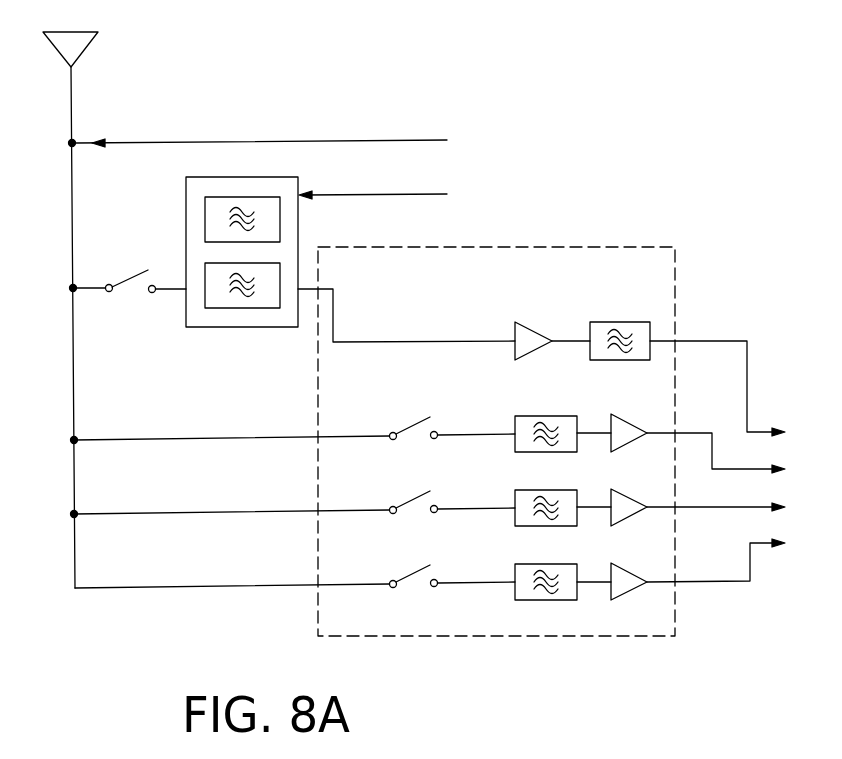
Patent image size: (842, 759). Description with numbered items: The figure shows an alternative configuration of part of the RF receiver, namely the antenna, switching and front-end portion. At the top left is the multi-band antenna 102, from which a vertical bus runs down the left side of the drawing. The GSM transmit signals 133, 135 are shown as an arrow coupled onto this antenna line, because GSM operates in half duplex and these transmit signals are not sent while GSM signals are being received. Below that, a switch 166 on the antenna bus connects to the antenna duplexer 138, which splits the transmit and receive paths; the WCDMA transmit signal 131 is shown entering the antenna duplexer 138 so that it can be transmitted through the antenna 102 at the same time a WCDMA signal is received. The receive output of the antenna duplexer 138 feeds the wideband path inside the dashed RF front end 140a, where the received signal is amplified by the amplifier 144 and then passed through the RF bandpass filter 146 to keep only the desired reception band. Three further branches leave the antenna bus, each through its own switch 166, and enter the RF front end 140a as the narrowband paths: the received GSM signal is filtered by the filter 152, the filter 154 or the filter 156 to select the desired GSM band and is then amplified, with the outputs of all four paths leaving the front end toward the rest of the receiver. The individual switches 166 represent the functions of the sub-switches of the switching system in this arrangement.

The multi-band antenna 102 is at (88, 47).
The GSM transmit signal 133 is at (261, 127).
The GSM transmit signal 135 is at (261, 127).
The WCDMA transmit signal 131 is at (373, 180).
The antenna duplexer 138 is at (185, 218).
The switch 166 is at (130, 279).
The RF front end 140a is at (533, 247).
The amplifier 144 is at (533, 330).
The RF bandpass filter 146 is at (645, 322).
The filter 152 is at (535, 416).
The filter 154 is at (535, 490).
The filter 156 is at (535, 564).